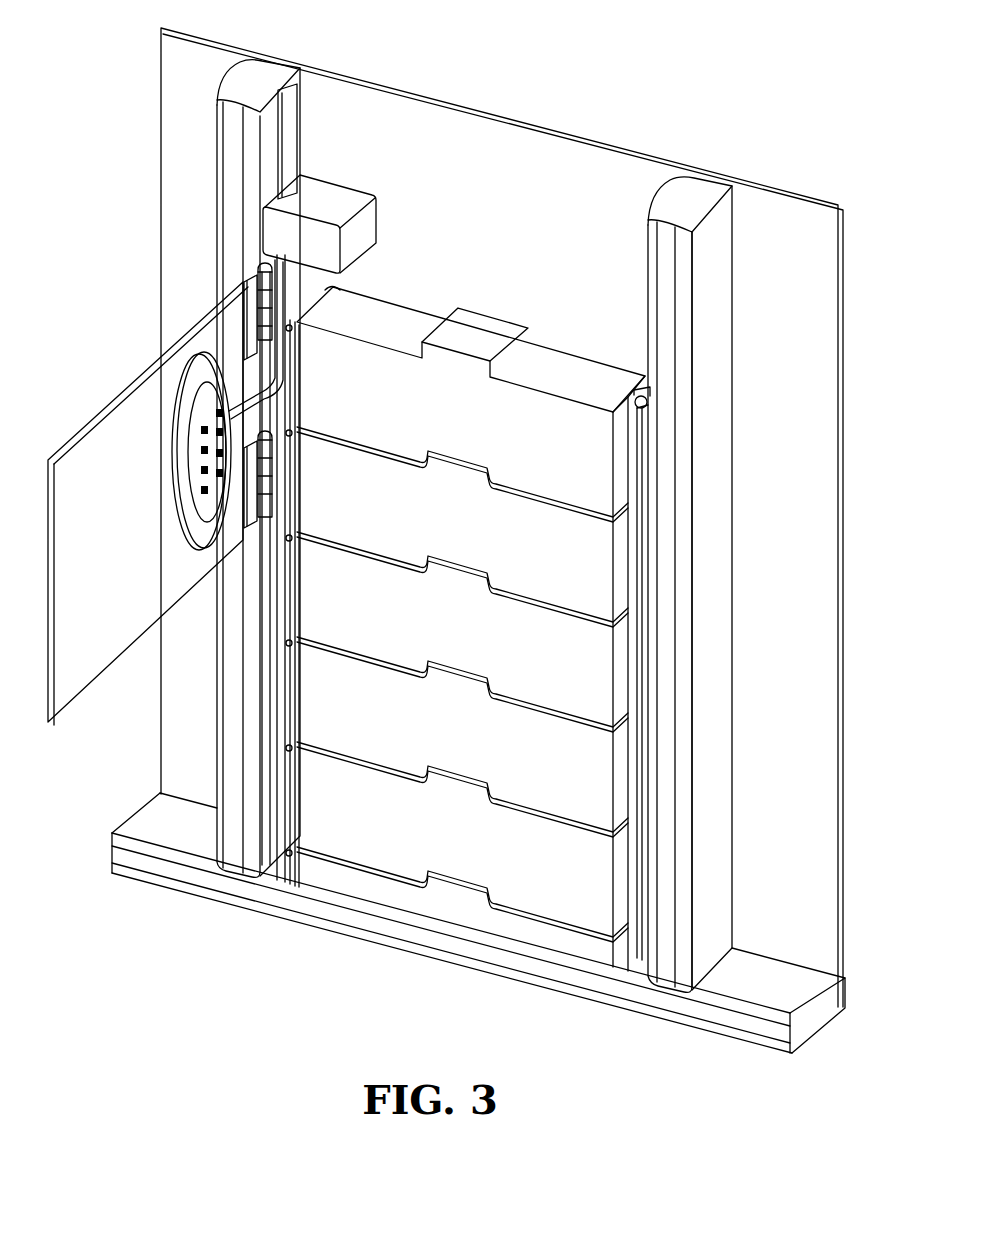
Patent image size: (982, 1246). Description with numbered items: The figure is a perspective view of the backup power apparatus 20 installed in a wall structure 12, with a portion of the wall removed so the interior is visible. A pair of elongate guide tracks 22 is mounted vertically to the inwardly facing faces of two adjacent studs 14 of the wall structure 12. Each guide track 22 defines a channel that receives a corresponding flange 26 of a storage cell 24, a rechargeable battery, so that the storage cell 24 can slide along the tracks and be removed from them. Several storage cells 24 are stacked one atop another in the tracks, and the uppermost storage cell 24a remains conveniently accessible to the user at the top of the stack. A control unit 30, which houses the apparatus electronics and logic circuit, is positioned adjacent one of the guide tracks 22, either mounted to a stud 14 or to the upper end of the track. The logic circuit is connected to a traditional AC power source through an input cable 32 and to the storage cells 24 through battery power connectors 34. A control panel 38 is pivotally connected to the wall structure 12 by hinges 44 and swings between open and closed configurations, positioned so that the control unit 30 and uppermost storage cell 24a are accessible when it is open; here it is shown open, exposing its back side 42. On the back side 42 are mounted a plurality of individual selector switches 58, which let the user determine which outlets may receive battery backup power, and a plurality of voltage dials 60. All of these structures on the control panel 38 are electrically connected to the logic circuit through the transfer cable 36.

The wall structure 12 is at (777, 165).
The studs 14 is at (218, 148).
The apparatus 20 is at (514, 506).
The guide tracks 22 is at (648, 457).
The storage cell 24 is at (598, 570).
The uppermost storage cell 24a is at (510, 446).
The flange 26 is at (332, 289).
The control unit 30 is at (337, 182).
The input cable 32 is at (292, 97).
The battery power connectors 34 is at (287, 718).
The transfer cable 36 is at (243, 407).
The control panel 38 is at (148, 502).
The back side 42 is at (88, 626).
The hinges 44 is at (257, 273).
The individual selector switches 58 is at (197, 470).
The voltage dials 60 is at (210, 407).